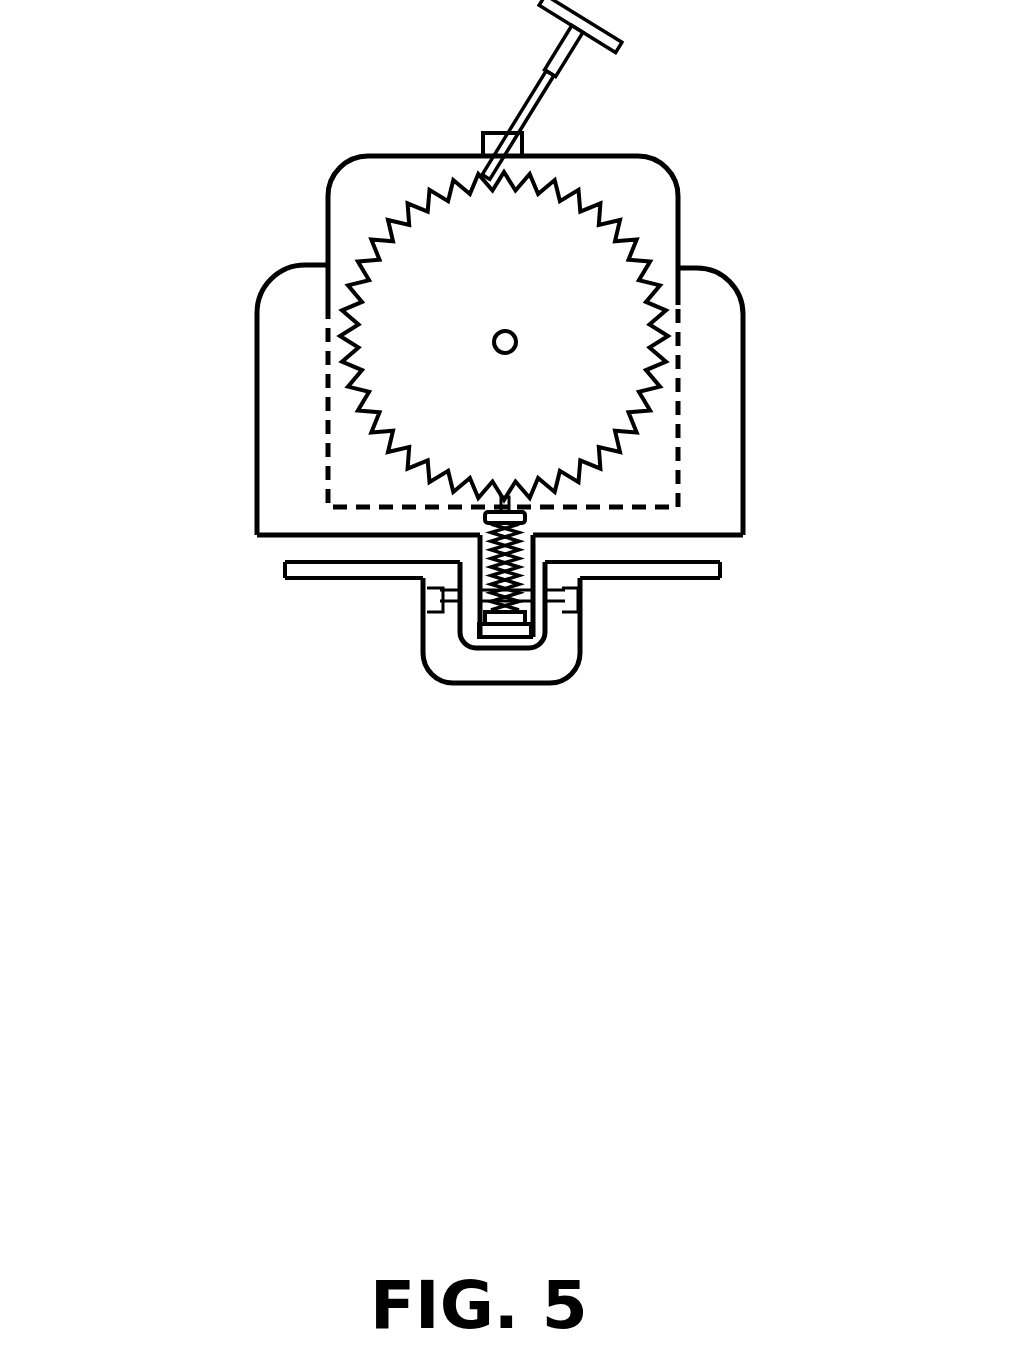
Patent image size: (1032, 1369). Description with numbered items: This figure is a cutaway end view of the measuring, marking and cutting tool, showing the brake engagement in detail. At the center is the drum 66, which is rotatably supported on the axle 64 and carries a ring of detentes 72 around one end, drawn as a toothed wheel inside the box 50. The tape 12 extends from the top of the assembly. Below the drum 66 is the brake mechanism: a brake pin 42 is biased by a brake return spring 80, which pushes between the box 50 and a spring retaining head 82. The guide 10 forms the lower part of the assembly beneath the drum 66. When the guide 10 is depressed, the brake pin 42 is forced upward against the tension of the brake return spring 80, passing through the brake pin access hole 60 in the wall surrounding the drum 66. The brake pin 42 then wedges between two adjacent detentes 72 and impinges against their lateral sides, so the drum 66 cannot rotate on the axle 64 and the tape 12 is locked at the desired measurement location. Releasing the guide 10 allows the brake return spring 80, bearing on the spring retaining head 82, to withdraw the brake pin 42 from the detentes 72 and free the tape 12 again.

The guide 10 is at (391, 490).
The tape 12 is at (331, 89).
The brake pin 42 is at (602, 540).
The box 50 is at (359, 320).
The brake pin access hole 60 is at (702, 475).
The axle 64 is at (278, 343).
The drum 66 is at (354, 336).
The detentes 72 is at (763, 213).
The brake return spring 80 is at (279, 565).
The spring retaining head 82 is at (699, 707).